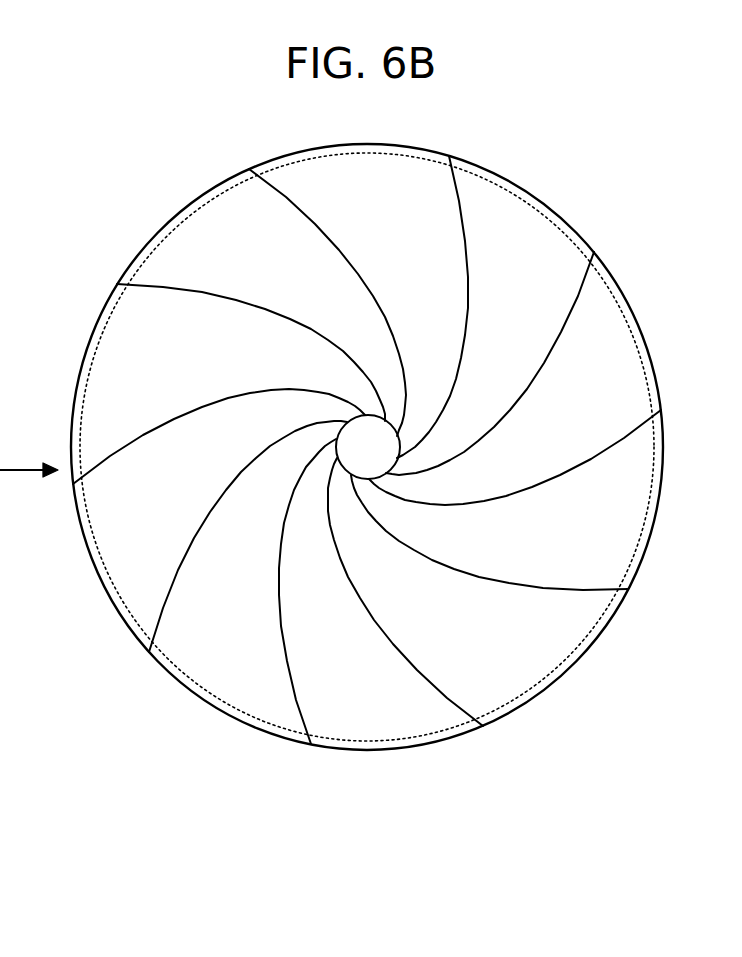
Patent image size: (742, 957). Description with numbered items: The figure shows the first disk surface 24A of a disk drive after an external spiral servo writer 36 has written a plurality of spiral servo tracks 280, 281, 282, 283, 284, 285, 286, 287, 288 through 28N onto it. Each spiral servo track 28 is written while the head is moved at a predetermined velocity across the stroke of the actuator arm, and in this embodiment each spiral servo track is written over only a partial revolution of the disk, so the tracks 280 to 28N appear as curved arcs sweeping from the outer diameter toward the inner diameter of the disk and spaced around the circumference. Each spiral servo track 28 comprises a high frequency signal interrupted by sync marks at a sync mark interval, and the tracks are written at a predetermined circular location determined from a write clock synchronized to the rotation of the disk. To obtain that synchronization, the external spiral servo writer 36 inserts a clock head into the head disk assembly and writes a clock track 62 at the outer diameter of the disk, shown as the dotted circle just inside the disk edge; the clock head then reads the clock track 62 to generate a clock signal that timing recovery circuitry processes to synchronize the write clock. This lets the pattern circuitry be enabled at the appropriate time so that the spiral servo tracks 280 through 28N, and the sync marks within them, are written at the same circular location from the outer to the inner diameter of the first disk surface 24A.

The first disk surface 24A is at (559, 200).
The spiral servo track 28 is at (373, 454).
The spiral servo track 28N is at (280, 192).
The spiral servo track 280 is at (458, 193).
The spiral servo track 281 is at (581, 288).
The spiral servo track 282 is at (630, 433).
The spiral servo track 283 is at (590, 591).
The spiral servo track 284 is at (448, 741).
The spiral servo track 285 is at (298, 709).
The spiral servo track 286 is at (160, 615).
The spiral servo track 287 is at (97, 466).
The spiral servo track 288 is at (155, 286).
The external spiral servo writer 36 is at (2, 155).
The clock track 62 is at (655, 530).